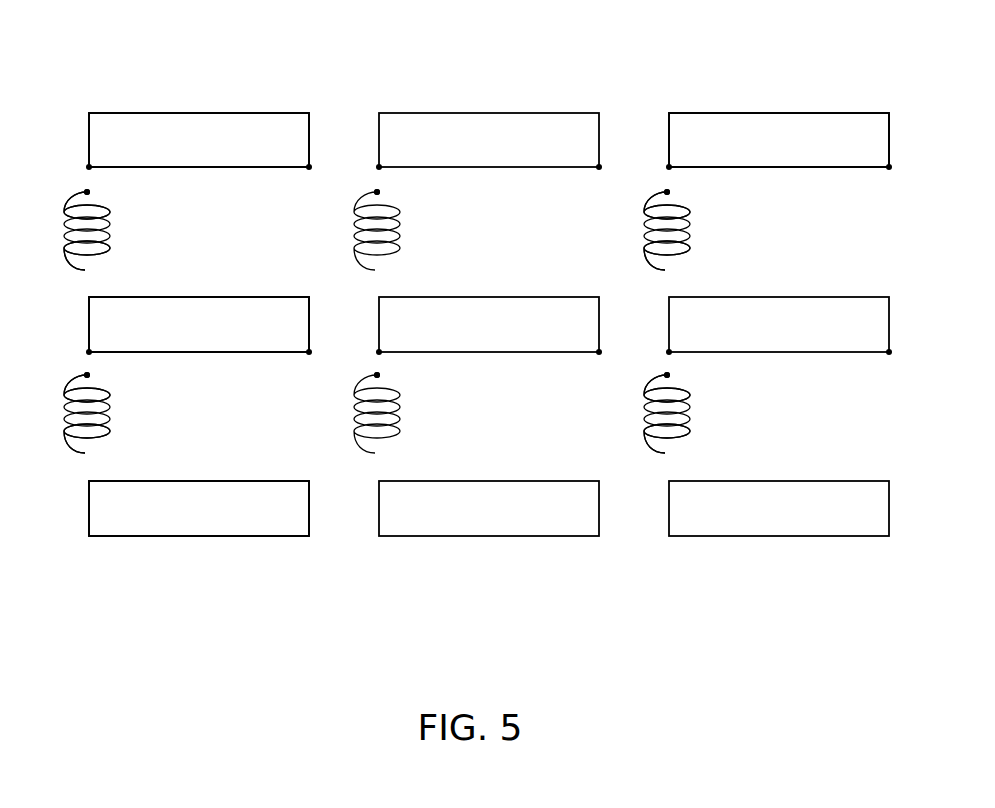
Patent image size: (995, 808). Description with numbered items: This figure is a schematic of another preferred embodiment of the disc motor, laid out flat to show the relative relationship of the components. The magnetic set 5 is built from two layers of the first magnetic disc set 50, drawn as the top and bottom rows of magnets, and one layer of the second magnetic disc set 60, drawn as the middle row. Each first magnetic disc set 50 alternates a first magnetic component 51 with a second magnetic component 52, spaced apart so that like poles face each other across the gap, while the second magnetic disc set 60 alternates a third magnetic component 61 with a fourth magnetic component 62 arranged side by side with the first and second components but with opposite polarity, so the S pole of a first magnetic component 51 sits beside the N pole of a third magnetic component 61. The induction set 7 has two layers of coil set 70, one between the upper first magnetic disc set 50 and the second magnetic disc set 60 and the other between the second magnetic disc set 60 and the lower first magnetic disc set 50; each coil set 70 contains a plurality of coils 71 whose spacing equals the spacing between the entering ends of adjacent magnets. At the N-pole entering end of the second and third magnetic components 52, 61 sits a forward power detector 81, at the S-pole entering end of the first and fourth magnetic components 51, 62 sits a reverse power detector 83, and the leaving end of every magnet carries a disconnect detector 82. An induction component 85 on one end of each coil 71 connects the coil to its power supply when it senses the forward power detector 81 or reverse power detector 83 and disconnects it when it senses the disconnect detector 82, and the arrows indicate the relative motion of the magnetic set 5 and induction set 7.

The magnetic set 5 is at (852, 84).
The induction set 7 is at (814, 253).
The first magnetic disc set 50 is at (125, 78).
The first magnetic component 51 is at (198, 113).
The second magnetic component 52 is at (488, 113).
The second magnetic disc set 60 is at (74, 292).
The third magnetic component 61 is at (237, 337).
The fourth magnetic component 62 is at (522, 340).
The coil set 70 is at (218, 268).
The coil 71 is at (110, 228).
The forward power detector 81 is at (379, 167).
The disconnect detector 82 is at (309, 167).
The reverse power detector 83 is at (89, 167).
The induction component 85 is at (87, 192).